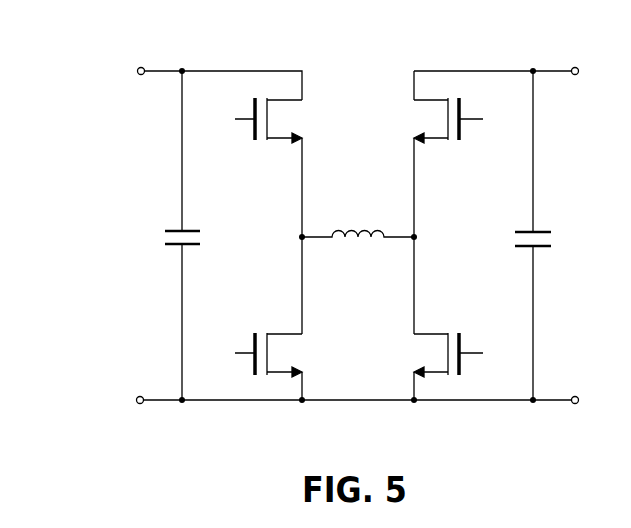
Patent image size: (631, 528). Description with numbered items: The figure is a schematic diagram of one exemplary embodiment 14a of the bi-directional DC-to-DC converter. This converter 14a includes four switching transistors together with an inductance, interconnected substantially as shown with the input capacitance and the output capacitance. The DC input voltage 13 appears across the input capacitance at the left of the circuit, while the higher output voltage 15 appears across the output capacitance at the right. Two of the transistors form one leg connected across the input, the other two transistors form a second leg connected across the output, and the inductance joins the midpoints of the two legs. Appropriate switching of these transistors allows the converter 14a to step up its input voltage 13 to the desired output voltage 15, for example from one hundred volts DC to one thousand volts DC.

The input voltage 13 is at (164, 70).
The output voltage 15 is at (555, 70).
The bi-directional DC-to-DC converter embodiment 14a is at (356, 245).